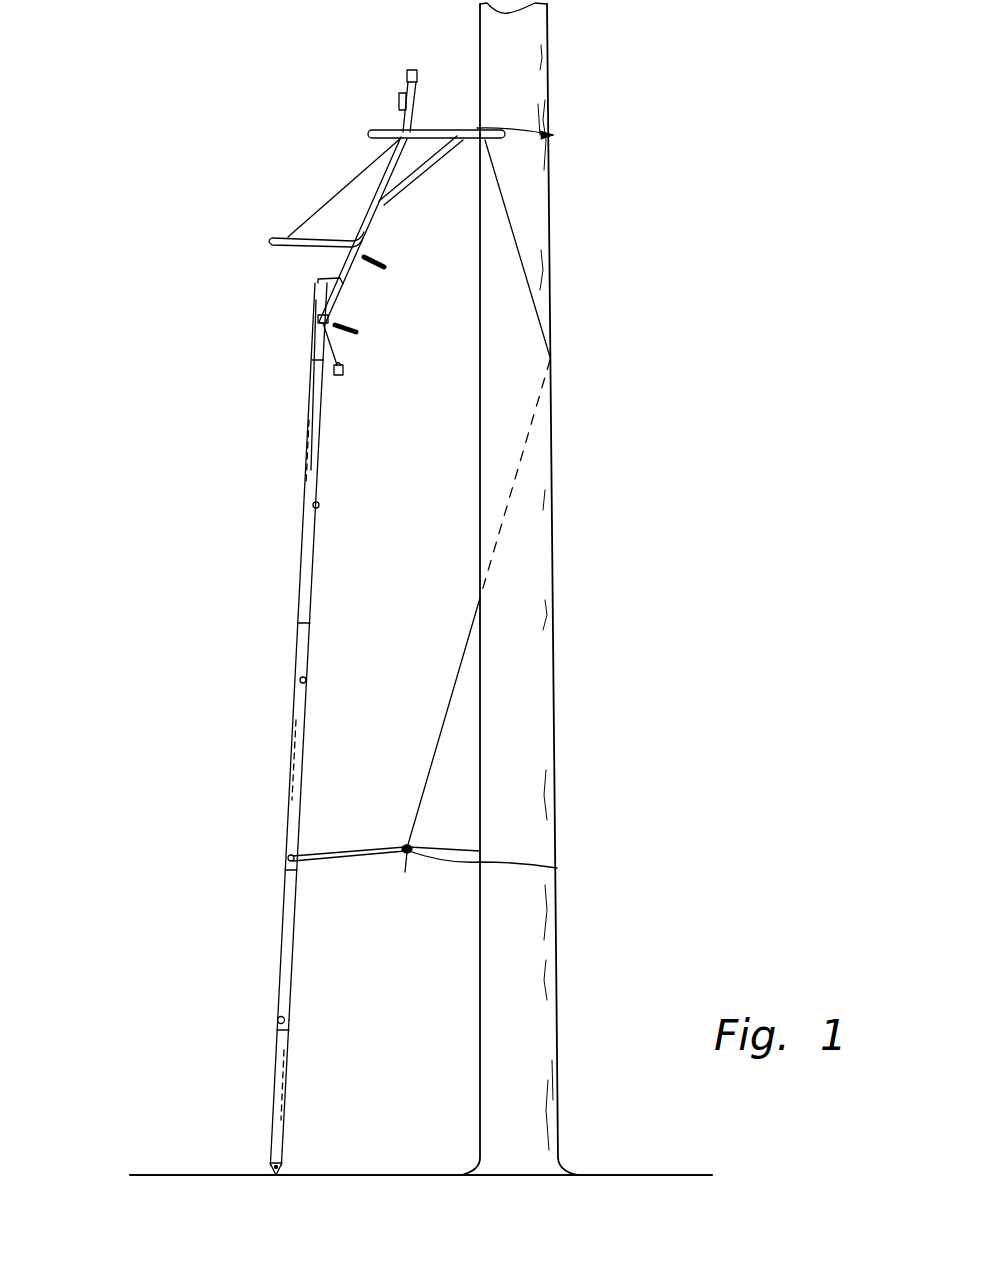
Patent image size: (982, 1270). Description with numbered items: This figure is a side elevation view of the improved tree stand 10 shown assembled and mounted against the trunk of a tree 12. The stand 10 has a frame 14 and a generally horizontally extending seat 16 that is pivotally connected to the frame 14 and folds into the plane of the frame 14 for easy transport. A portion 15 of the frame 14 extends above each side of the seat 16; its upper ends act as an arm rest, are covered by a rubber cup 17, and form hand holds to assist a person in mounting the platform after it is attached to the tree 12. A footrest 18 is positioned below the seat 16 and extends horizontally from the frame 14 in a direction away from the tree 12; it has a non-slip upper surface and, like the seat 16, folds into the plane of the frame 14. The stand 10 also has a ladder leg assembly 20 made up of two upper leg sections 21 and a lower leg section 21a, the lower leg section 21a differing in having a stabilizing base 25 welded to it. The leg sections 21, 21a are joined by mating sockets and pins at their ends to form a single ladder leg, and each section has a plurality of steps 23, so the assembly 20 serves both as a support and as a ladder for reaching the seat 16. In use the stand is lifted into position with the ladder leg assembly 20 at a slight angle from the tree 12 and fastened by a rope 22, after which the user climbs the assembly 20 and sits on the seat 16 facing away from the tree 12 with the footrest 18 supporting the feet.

The tree stand 10 is at (170, 390).
The tree 12 is at (541, 931).
The frame 14 is at (336, 264).
The portion of frame 15 is at (413, 96).
The seat 16 is at (370, 134).
The rubber cup 17 is at (413, 68).
The footrest 18 is at (281, 236).
The ladder leg assembly 20 is at (298, 440).
The upper leg section 21 is at (318, 413).
The lower leg section 21a is at (282, 1100).
The rope 22 is at (392, 858).
The steps 23 is at (285, 1020).
The stabilizing base 25 is at (278, 1171).